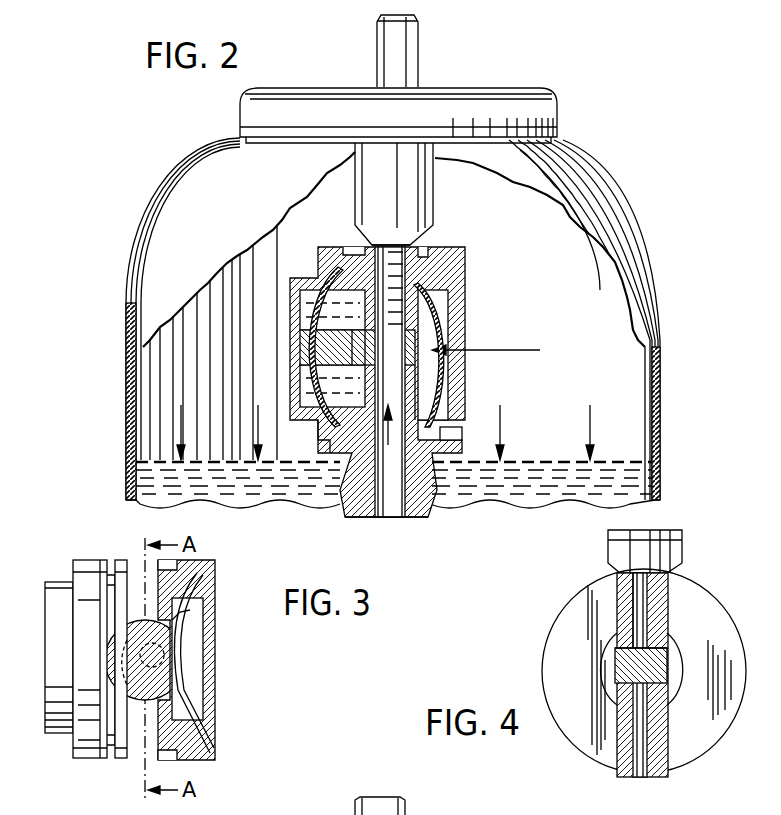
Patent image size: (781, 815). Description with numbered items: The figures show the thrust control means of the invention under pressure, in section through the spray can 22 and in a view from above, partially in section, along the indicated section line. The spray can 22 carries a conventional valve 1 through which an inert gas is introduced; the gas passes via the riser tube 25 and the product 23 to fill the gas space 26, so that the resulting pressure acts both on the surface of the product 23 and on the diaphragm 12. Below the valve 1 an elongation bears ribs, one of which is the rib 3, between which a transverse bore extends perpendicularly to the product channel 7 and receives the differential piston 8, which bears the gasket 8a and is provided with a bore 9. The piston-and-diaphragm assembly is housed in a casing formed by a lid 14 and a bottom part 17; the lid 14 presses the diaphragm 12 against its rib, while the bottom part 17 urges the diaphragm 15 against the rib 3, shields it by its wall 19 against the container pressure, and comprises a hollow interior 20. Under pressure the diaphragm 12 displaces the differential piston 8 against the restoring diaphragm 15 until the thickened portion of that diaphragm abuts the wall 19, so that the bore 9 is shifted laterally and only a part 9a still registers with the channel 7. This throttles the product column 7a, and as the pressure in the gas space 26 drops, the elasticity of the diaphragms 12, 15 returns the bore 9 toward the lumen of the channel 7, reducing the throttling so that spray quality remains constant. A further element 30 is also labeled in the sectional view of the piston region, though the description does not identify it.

In FIG. 2, the valve 1 is at (404, 165).
In FIG. 4, the valve 1 is at (685, 538).
In FIG. 3, the rib 3 is at (120, 560).
In FIG. 4, the rib 3 is at (702, 610).
In FIG. 2, the product channel 7 is at (381, 256).
In FIG. 3, the product channel 7 is at (195, 630).
In FIG. 4, the product channel 7 is at (660, 745).
In FIG. 2, the product column 7a is at (420, 250).
In FIG. 2, the differential piston 8 is at (333, 333).
In FIG. 3, the differential piston 8 is at (165, 670).
In FIG. 4, the differential piston 8 is at (660, 655).
In FIG. 2, the gasket 8a is at (420, 372).
In FIG. 2, the bore 9 is at (350, 340).
In FIG. 3, the bore 9 is at (140, 655).
In FIG. 4, the bore 9 is at (615, 640).
In FIG. 2, the part of the bore 9a is at (370, 330).
In FIG. 3, the part of the bore 9a is at (185, 690).
In FIG. 2, the diaphragm 12 is at (479, 355).
In FIG. 3, the diaphragm 12 is at (198, 625).
In FIG. 3, the lid 14 is at (215, 572).
In FIG. 2, the diaphragm 15 is at (335, 324).
In FIG. 2, the bottom part 17 is at (318, 452).
In FIG. 3, the bottom part 17 is at (92, 560).
In FIG. 2, the wall 19 is at (320, 356).
In FIG. 2, the hollow interior 20 is at (312, 285).
In FIG. 2, the spray can 22 is at (602, 182).
In FIG. 2, the product 23 is at (688, 465).
In FIG. 2, the riser tube 25 is at (341, 490).
In FIG. 2, the gas space 26 is at (570, 292).
In FIG. 4, the bore 30 is at (625, 668).